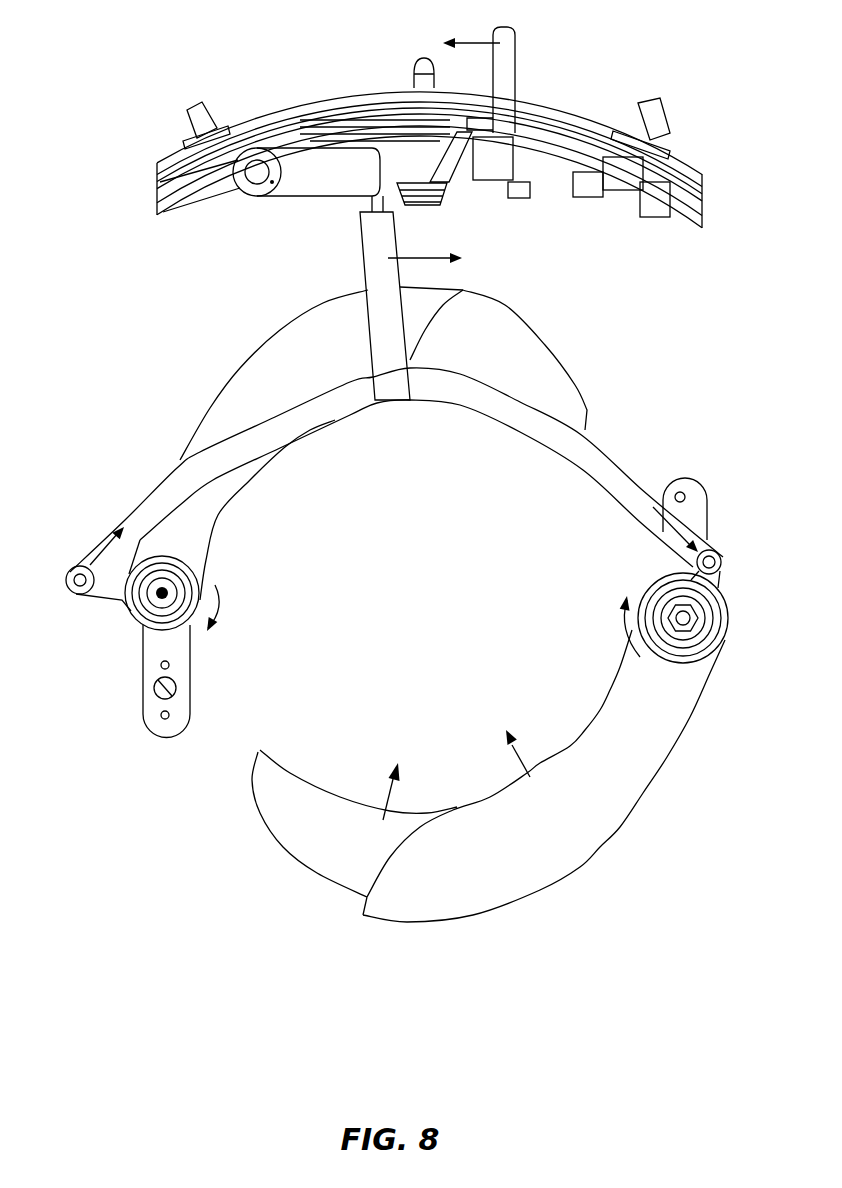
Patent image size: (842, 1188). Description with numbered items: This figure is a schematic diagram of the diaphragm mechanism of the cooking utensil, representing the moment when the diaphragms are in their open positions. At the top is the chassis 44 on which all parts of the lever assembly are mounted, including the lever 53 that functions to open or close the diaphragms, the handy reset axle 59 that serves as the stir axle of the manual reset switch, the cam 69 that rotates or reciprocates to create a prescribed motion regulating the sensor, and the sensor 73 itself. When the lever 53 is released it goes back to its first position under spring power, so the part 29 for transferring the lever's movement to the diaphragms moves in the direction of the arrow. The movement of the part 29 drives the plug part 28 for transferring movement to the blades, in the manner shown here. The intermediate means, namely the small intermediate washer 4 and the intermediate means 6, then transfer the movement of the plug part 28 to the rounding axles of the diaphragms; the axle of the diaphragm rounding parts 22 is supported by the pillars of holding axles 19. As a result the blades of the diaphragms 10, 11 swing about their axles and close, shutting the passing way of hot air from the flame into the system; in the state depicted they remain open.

The small intermediate washer 4 is at (690, 582).
The intermediate means 6 is at (112, 592).
The blade of diaphragm 10 is at (255, 384).
The blade of diaphragm 11 is at (488, 357).
The pillars of holding axles 19 is at (180, 712).
The axle of diaphragms rounding parts 22 is at (143, 623).
The plug part 28 is at (625, 487).
The part for transferring lever's movement to the diaphragms 29 is at (380, 243).
The chassis 44 is at (327, 100).
The lever 53 is at (505, 82).
The handy reset axle 59 is at (190, 117).
The cam 69 is at (188, 198).
The sensor 73 is at (305, 167).